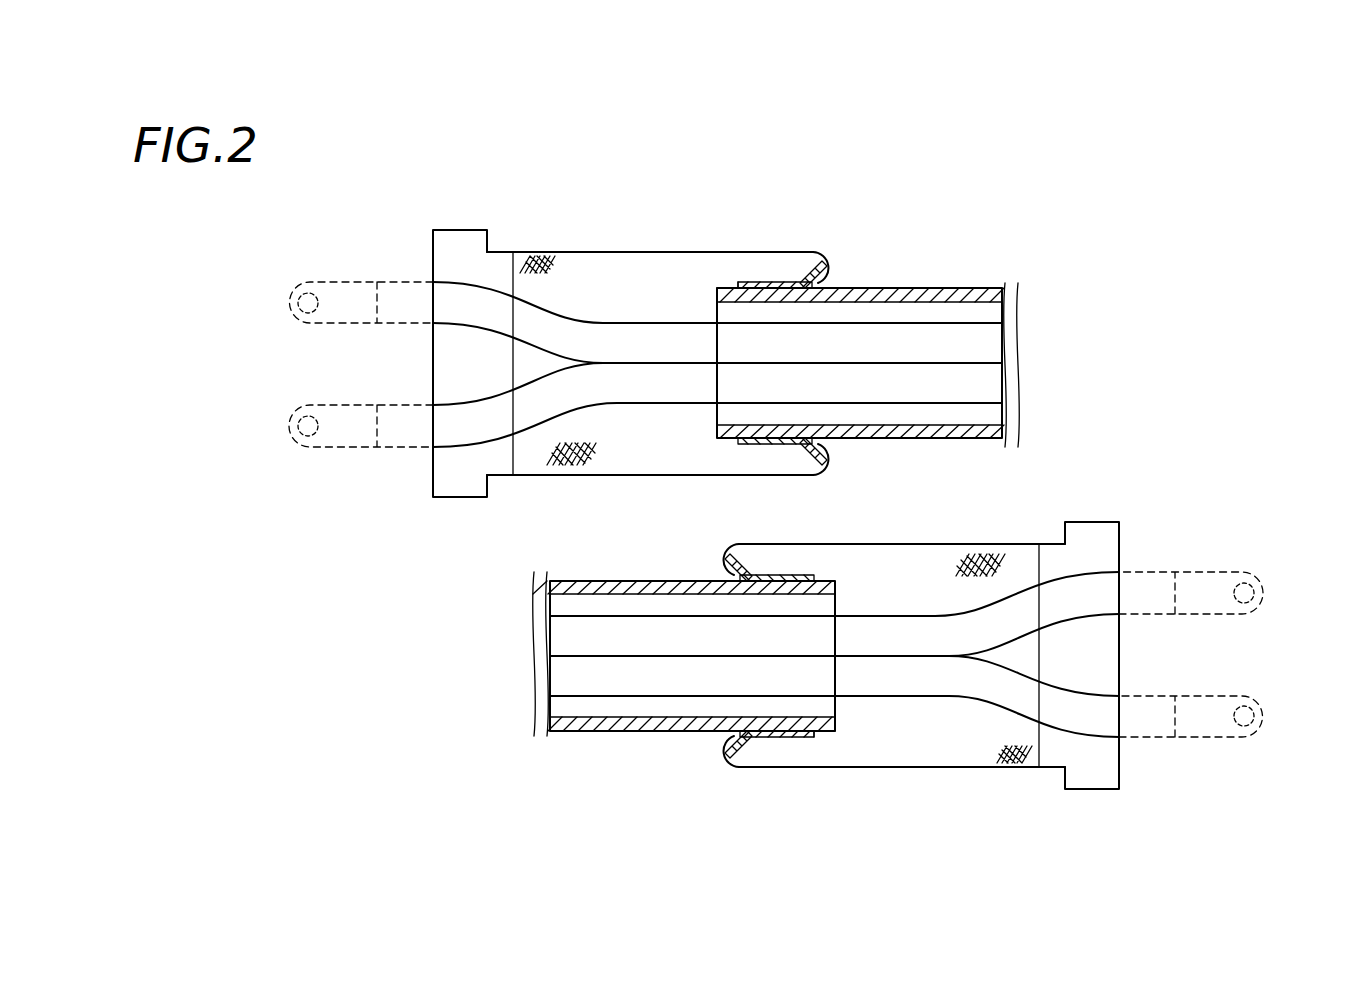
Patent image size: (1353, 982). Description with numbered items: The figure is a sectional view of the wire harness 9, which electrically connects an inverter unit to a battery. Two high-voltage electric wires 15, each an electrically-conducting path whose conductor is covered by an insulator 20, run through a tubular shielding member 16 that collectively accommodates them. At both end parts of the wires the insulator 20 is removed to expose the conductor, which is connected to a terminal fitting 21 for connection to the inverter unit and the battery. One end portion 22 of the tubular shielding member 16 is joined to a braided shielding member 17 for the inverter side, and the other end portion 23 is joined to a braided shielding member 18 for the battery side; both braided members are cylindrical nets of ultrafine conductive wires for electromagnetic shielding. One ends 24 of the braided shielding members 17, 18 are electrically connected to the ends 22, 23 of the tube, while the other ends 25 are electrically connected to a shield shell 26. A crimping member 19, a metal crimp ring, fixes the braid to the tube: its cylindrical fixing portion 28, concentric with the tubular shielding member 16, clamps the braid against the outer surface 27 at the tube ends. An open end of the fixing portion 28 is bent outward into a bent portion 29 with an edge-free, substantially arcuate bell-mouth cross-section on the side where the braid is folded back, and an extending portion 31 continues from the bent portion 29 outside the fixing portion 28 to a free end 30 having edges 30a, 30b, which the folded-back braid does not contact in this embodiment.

The wire harness 9 is at (1142, 265).
The high-voltage electric wire 15 is at (1000, 340).
The tubular shielding member 16 is at (971, 281).
The braided shielding member 17 is at (583, 250).
The braided shielding member 18 is at (962, 769).
The crimping member 19 is at (774, 510).
The insulator 20 is at (625, 382).
The terminal fitting 21 is at (290, 300).
The end portion of tubular shielding member 22 is at (730, 286).
The end portion of tubular shielding member 23 is at (822, 735).
The one end of braided shielding member 24 is at (745, 284).
The other end of braided shielding member 25 is at (523, 252).
The shield shell 26 is at (450, 230).
The outer surface 27 is at (940, 288).
The fixing portion 28 is at (748, 283).
The bent portion 29 is at (838, 290).
The free end 30 is at (773, 511).
The edge 30a is at (809, 272).
The edge 30b is at (828, 272).
The extending portion 31 is at (770, 283).